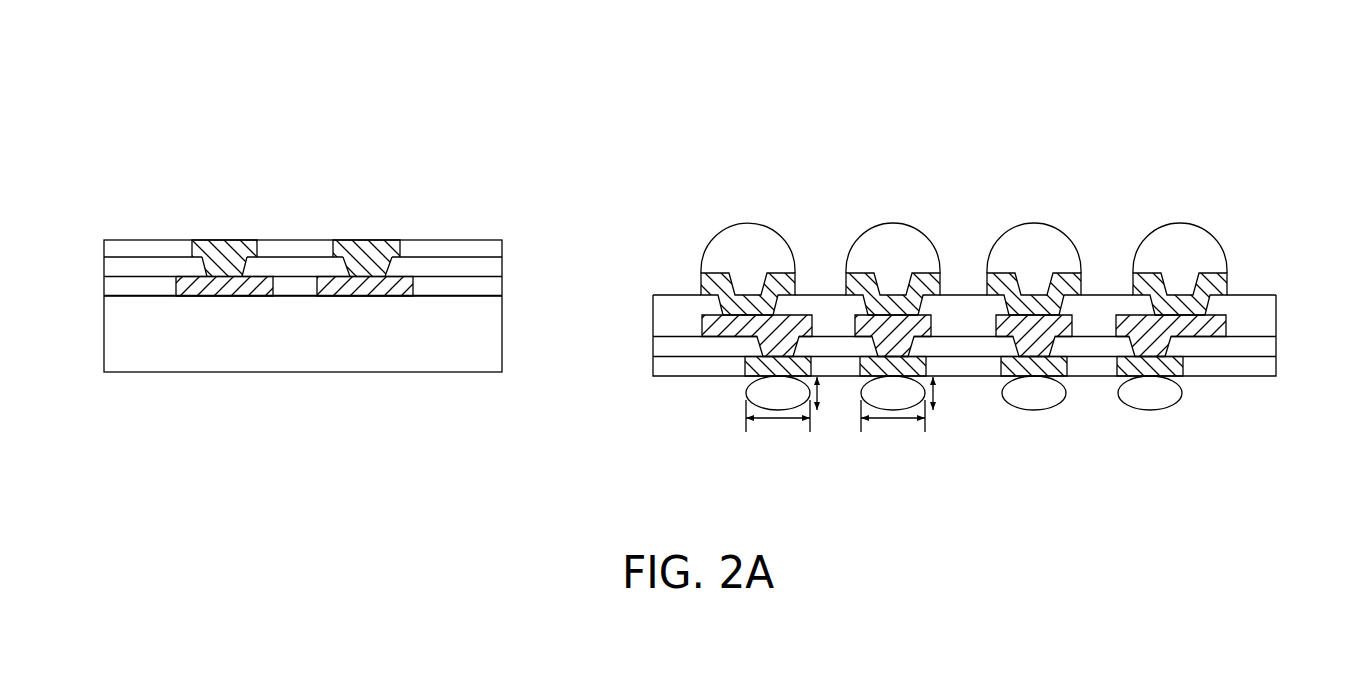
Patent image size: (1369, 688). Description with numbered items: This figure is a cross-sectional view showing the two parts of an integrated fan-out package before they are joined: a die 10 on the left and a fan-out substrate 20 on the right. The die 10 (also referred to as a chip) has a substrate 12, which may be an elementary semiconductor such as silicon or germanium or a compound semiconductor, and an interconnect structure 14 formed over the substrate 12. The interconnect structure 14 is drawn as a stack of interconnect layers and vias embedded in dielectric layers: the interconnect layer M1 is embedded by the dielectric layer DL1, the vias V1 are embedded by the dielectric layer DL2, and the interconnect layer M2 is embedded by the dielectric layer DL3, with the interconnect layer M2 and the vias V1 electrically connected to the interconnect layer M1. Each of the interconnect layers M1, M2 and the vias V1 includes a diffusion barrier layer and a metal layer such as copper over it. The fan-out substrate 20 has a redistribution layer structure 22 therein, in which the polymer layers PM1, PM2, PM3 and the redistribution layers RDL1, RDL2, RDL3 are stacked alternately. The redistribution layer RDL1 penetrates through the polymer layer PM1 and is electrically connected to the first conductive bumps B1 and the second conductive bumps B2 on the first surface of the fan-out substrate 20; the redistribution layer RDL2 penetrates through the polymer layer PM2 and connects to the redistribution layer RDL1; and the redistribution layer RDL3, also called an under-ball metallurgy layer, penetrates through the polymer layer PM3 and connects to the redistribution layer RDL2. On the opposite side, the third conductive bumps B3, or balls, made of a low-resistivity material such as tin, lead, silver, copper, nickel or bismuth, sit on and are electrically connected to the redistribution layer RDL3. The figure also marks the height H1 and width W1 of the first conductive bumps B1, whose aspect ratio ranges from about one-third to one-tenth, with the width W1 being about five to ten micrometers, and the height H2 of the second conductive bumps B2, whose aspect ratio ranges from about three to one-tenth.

The die 10 is at (312, 284).
The substrate 12 is at (469, 353).
The interconnect structure 14 is at (334, 344).
The interconnect layer M1 is at (397, 285).
The via V1 is at (382, 272).
The interconnect layer M2 is at (363, 248).
The dielectric layer DL1 is at (487, 285).
The dielectric layer DL2 is at (488, 267).
The dielectric layer DL3 is at (493, 245).
The fan-out substrate 20 is at (964, 284).
The redistribution layer structure 22 is at (964, 399).
The polymer layer PM1 is at (663, 367).
The polymer layer PM2 is at (663, 350).
The polymer layer PM3 is at (665, 314).
The redistribution layer RDL1 is at (1188, 368).
The redistribution layer RDL2 is at (1215, 327).
The redistribution layer RDL3 is at (1222, 282).
The first conductive bump B1 is at (963, 392).
The second conductive bump B2 is at (964, 392).
The third conductive bump B3 is at (964, 248).
The height of the first conductive bumps H1 is at (952, 392).
The height of the second conductive bumps H2 is at (835, 392).
The width of the first conductive bumps W1 is at (835, 428).